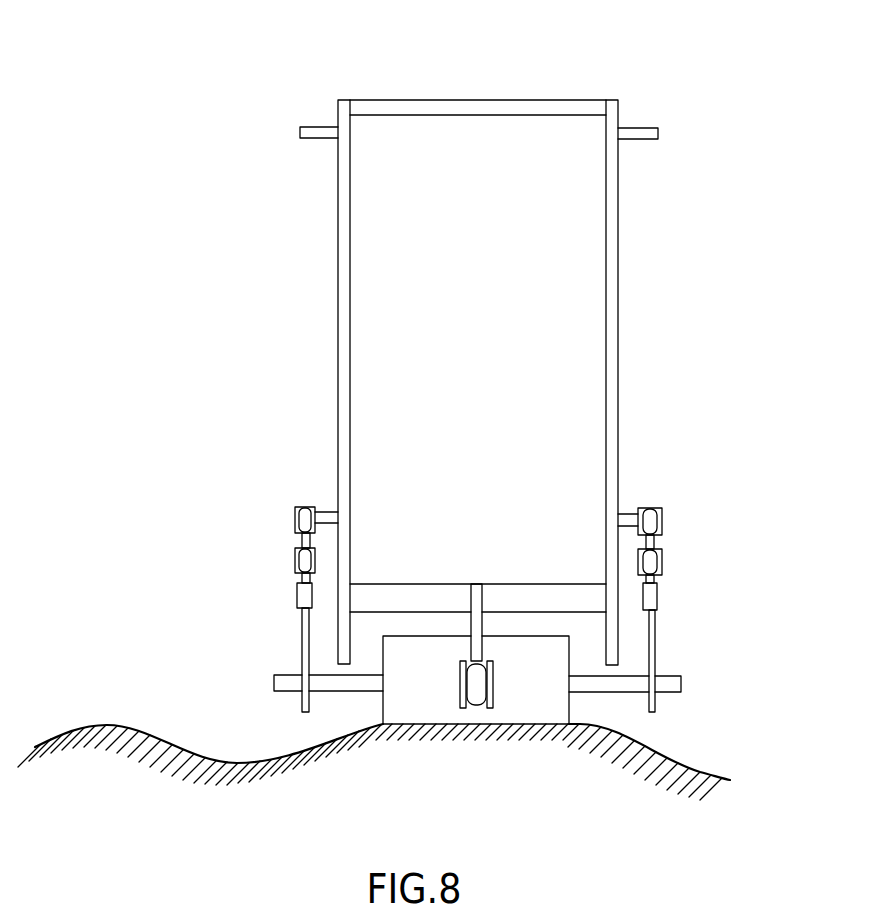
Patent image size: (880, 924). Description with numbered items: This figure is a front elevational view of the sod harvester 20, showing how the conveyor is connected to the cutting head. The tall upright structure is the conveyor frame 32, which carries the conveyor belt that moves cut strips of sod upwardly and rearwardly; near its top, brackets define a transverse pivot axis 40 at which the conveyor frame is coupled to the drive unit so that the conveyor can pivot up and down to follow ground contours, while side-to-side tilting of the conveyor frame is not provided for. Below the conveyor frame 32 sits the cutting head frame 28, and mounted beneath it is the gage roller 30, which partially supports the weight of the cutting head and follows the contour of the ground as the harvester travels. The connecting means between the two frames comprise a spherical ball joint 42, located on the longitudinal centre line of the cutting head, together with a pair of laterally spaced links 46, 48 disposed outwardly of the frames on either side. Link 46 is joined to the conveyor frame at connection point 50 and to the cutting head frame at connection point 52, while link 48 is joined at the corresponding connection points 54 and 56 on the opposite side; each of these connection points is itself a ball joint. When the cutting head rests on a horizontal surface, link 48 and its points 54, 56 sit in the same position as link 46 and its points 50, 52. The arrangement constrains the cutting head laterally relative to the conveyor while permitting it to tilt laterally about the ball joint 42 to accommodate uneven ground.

The sod harvester 20 is at (559, 92).
The cutting head frame 28 is at (659, 650).
The gage roller 30 is at (523, 710).
The conveyor frame 32 is at (619, 363).
The transverse pivot axis 40 is at (320, 127).
The spherical ball joint 42 is at (472, 707).
The link 46 is at (298, 538).
The link 48 is at (655, 544).
The connection point 50 is at (305, 506).
The connection point 52 is at (293, 563).
The connection point 54 is at (650, 508).
The connection point 56 is at (662, 561).